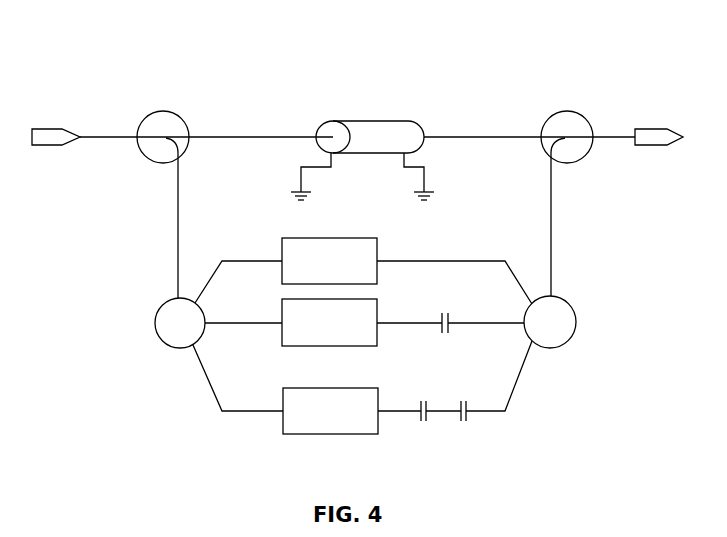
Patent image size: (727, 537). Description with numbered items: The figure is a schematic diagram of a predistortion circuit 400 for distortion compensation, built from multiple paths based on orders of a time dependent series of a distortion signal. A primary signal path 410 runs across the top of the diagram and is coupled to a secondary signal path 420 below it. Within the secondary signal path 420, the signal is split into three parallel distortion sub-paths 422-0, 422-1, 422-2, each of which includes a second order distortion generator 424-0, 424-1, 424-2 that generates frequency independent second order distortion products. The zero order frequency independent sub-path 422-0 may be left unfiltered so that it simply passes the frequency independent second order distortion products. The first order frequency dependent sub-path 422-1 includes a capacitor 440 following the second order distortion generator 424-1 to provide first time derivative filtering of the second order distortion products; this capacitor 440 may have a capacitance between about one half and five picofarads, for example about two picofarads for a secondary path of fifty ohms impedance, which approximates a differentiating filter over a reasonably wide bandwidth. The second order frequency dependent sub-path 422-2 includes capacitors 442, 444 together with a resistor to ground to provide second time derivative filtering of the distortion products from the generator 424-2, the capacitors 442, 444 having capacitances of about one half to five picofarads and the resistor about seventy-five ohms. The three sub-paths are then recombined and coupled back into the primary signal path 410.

The predistortion circuit 400 is at (210, 55).
The primary signal path 410 is at (398, 86).
The secondary signal path 420 is at (98, 273).
The zero order frequency independent sub-path 422-0 is at (195, 257).
The first order frequency dependent sub-path 422-1 is at (212, 342).
The second order frequency dependent sub-path 422-2 is at (190, 412).
The second order distortion generator 424-0 is at (282, 247).
The second order distortion generator 424-1 is at (282, 308).
The second order distortion generator 424-2 is at (283, 398).
The capacitor 440 is at (440, 309).
The capacitor 442 is at (418, 400).
The capacitor 444 is at (444, 387).